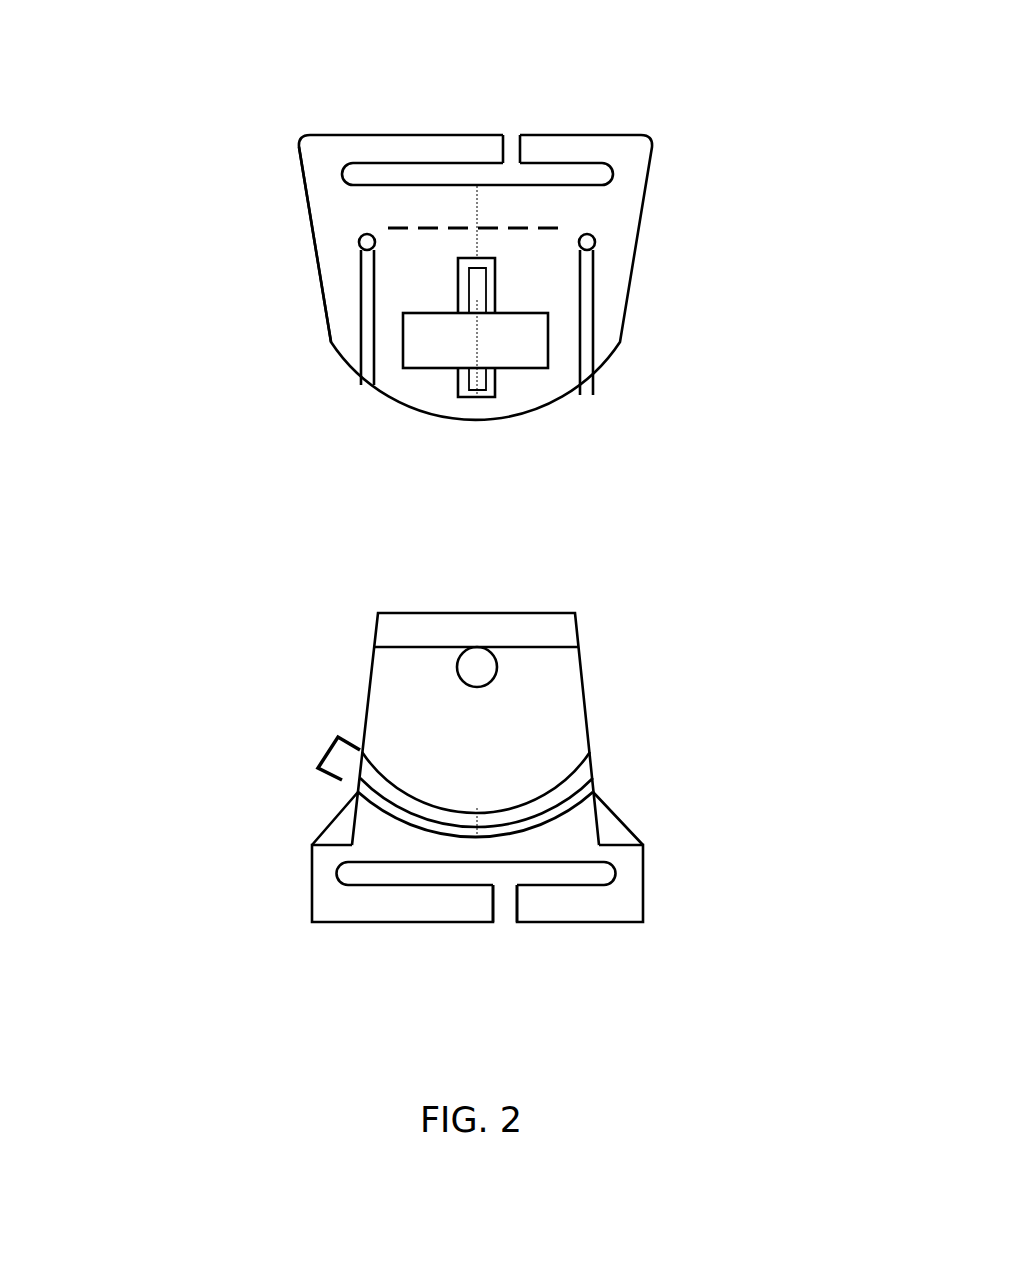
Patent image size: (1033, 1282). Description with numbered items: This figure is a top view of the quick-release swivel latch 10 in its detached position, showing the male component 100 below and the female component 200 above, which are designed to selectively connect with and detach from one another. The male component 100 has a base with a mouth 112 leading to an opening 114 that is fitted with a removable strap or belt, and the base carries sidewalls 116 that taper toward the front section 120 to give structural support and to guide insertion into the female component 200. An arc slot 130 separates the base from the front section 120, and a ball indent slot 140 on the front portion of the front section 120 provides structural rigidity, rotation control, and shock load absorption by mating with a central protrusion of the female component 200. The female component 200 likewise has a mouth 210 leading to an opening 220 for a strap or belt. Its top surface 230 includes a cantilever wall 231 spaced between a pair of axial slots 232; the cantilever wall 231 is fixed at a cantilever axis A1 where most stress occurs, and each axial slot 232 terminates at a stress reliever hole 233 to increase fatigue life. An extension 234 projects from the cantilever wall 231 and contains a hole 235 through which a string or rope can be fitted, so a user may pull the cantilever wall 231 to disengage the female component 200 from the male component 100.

The quick-release swivel latch 10 is at (116, 326).
The male component 100 is at (675, 928).
The mouth 112 is at (507, 905).
The opening 114 is at (397, 872).
The sidewalls 116 is at (612, 828).
The front section 120 is at (535, 707).
The arc slot 130 is at (328, 755).
The ball indent slot 140 is at (472, 662).
The female component 200 is at (612, 76).
The mouth 210 is at (513, 145).
The opening 220 is at (405, 173).
The top surface 230 is at (358, 210).
The cantilever wall 231 is at (405, 284).
The axial slots 232 is at (587, 325).
The stress reliever hole 233 is at (587, 242).
The extension 234 is at (518, 357).
The hole 235 is at (475, 378).
The cantilever axis A1 is at (537, 222).